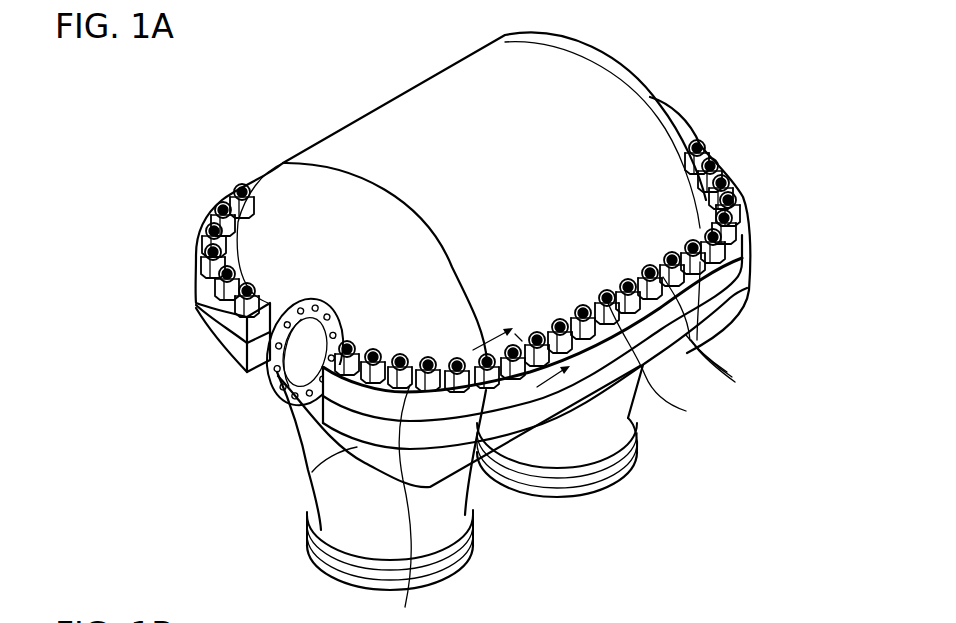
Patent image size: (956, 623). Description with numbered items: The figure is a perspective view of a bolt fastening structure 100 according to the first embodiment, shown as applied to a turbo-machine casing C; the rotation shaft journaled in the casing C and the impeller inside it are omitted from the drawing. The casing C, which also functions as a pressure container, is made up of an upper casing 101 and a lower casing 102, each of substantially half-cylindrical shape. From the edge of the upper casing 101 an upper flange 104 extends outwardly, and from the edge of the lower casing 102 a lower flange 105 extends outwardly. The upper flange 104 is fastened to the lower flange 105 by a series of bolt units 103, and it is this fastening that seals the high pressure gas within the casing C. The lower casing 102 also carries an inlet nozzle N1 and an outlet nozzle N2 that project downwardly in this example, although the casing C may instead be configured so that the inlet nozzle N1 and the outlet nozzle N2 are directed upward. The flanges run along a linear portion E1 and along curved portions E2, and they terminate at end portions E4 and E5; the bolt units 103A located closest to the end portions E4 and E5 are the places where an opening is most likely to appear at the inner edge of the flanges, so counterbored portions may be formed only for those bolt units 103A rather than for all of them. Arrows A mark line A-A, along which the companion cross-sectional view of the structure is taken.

The bolt fastening structure 100 is at (715, 80).
The upper casing 101 is at (410, 138).
The lower casing 102 is at (313, 487).
The bolt units 103 is at (727, 370).
The bolt units located closest to end portions 103A is at (262, 303).
The upper flange 104 is at (480, 403).
The lower flange 105 is at (502, 474).
The inlet nozzle N1 is at (607, 437).
The outlet nozzle N2 is at (343, 523).
The linear portion E1 is at (658, 361).
The curved portions E2 is at (743, 213).
The end portion E4 is at (279, 390).
The end portion E5 is at (207, 300).
The line A- A is at (530, 349).
The casing C is at (552, 33).